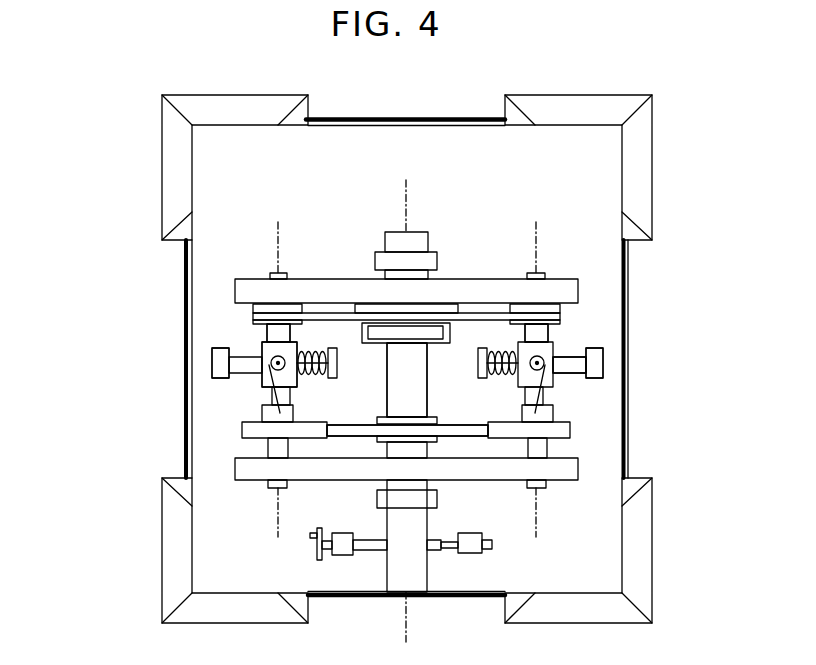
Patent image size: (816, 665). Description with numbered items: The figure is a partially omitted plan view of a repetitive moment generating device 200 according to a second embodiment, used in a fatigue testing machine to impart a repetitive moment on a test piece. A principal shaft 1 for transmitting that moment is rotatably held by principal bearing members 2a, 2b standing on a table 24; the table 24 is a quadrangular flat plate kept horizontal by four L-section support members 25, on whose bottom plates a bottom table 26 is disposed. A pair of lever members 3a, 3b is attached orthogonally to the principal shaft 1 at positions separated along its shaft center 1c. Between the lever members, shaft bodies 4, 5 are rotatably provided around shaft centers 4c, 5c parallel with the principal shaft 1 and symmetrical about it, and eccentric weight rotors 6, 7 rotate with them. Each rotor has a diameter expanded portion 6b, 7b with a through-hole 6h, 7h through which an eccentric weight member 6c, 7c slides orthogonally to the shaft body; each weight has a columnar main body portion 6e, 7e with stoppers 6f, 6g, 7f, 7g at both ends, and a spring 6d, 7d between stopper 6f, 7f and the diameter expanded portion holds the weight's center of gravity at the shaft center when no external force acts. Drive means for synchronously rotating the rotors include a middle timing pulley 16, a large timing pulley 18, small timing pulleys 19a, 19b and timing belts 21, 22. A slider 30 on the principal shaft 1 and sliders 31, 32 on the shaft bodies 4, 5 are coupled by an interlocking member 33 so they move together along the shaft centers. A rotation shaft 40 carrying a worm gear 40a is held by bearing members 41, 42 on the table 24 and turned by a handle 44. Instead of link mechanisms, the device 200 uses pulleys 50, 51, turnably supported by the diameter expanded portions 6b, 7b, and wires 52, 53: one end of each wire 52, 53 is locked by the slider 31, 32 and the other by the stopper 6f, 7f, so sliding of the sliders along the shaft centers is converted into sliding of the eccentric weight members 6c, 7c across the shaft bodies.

The repetitive moment generating device 200 is at (126, 130).
The principal shaft 1 is at (420, 231).
The shaft center 1c is at (406, 190).
The principal bearing member 2a is at (378, 257).
The principal bearing member 2b is at (375, 500).
The lever member 3a is at (470, 283).
The lever member 3b is at (580, 470).
The shaft body 4 is at (271, 272).
The shaft center 4c is at (278, 225).
The shaft body 5 is at (540, 272).
The shaft center 5c is at (536, 225).
The eccentric weight rotor 6 is at (257, 340).
The diameter expanded portion 6b is at (258, 348).
The eccentric weight member 6c is at (210, 362).
The spring 6d is at (312, 350).
The main body portion 6e is at (238, 356).
The stopper 6f is at (338, 362).
The stopper 6g is at (212, 376).
The through-hole 6h is at (259, 354).
The eccentric weight rotor 7 is at (558, 338).
The diameter expanded portion 7b is at (553, 352).
The eccentric weight member 7c is at (605, 360).
The spring 7d is at (500, 350).
The main body portion 7e is at (587, 350).
The stopper 7f is at (477, 362).
The stopper 7g is at (584, 372).
The through-hole 7h is at (571, 356).
The middle timing pulley 16 is at (414, 350).
The large timing pulley 18 is at (440, 304).
The small timing pulley 19a is at (517, 304).
The small timing pulley 19b is at (262, 302).
The timing belt 21 is at (372, 328).
The timing belt 22 is at (322, 305).
The table 24 is at (415, 121).
The support member 25 is at (656, 165).
The bottom table 26 is at (348, 117).
The slider 30 is at (428, 418).
The slider 31 is at (262, 412).
The slider 32 is at (522, 412).
The interlocking member 33 is at (360, 422).
The rotation shaft 40 is at (366, 553).
The worm gear 40a is at (432, 544).
The bearing member 41 is at (344, 556).
The bearing member 42 is at (478, 553).
The handle 44 is at (314, 535).
The pulley 50 is at (284, 370).
The pulley 51 is at (535, 368).
The wire 52 is at (268, 396).
The wire 53 is at (546, 405).